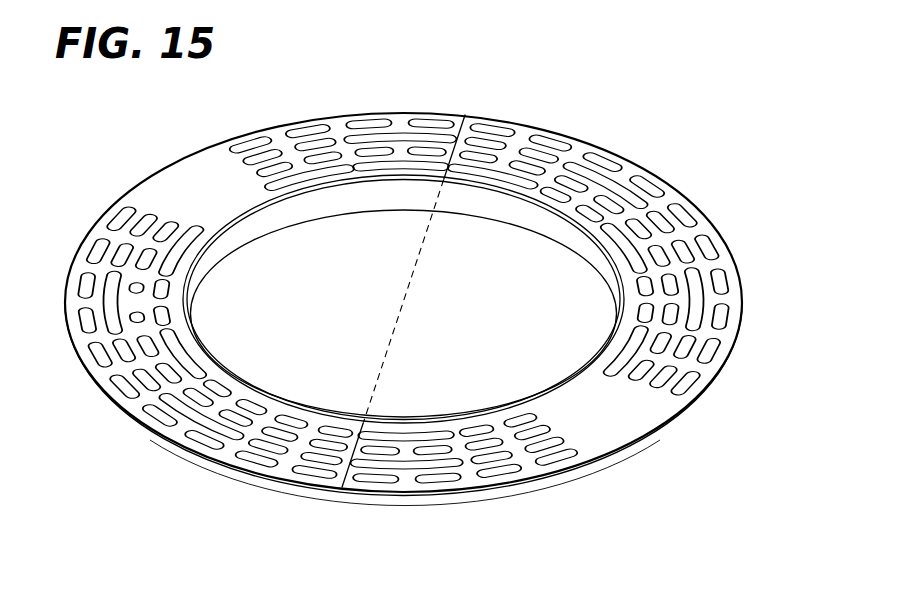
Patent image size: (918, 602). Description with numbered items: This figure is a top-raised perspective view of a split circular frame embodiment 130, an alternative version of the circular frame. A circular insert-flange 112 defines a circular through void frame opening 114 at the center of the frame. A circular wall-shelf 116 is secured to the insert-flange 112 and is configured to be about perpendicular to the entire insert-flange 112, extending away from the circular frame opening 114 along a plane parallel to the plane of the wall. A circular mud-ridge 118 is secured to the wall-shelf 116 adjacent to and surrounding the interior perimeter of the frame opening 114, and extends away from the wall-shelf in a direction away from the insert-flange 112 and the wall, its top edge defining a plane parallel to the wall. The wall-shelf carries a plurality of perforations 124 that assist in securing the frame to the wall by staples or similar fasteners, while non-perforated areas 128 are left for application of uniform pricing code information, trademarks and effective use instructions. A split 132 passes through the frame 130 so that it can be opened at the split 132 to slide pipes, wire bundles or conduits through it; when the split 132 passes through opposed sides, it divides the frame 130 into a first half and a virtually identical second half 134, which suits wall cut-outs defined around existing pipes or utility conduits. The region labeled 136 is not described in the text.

The circular insert-flange 112 is at (277, 226).
The circular frame opening 114 is at (465, 331).
The circular wall-shelf 116 is at (706, 375).
The circular mud-ridge 118 is at (560, 397).
The perforations 124 is at (243, 144).
The non-perforated areas 128 is at (170, 180).
The split circular frame embodiment 130 is at (674, 110).
The split 132 is at (480, 118).
The second half 134 is at (349, 123).
The slotted sector 136 is at (576, 130).